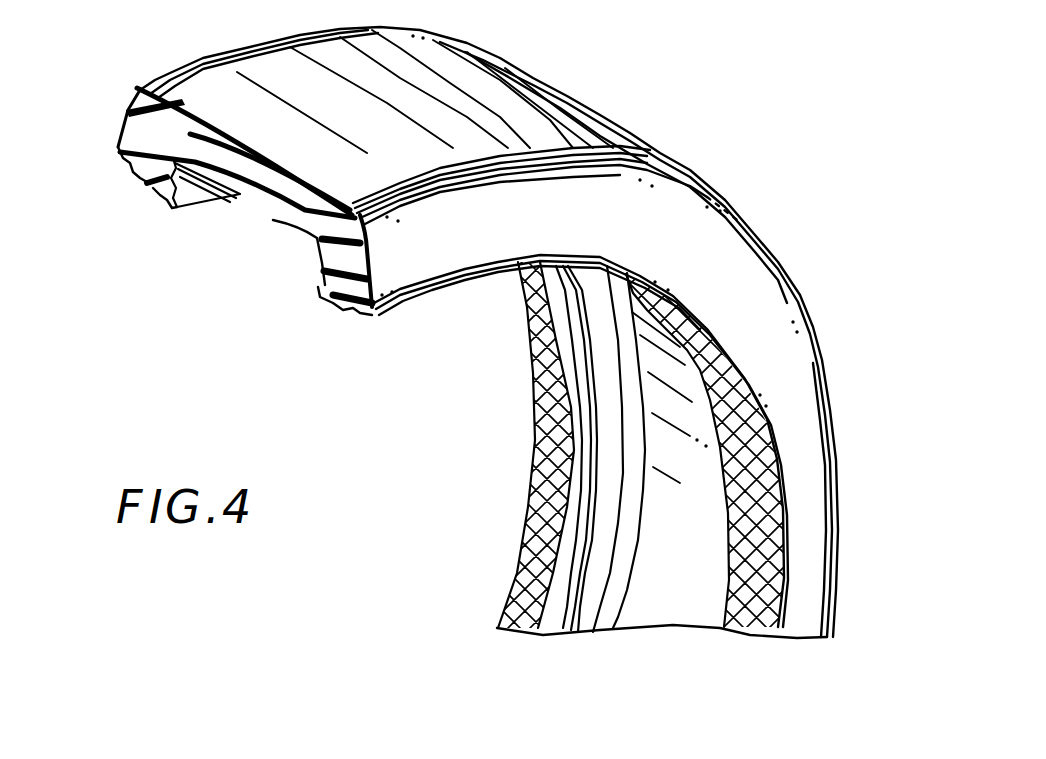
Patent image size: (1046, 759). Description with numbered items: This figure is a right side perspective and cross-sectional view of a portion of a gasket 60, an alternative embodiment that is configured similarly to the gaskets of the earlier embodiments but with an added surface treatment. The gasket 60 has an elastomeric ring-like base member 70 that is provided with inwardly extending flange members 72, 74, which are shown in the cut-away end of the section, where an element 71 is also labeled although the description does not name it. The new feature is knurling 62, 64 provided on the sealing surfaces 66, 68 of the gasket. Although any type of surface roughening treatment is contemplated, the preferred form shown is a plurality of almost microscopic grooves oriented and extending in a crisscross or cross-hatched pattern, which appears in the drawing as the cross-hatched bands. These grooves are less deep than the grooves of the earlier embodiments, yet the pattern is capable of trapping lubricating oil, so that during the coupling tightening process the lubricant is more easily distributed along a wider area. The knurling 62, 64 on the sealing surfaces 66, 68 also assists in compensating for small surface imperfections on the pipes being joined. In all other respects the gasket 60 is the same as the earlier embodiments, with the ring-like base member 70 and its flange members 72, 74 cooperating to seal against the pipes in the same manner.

The gasket 60 is at (562, 96).
The knurling 62 is at (140, 178).
The knurling 64 is at (348, 307).
The sealing surface 66 is at (530, 483).
The sealing surface 68 is at (786, 545).
The elastomeric ring-like base member 70 is at (310, 143).
The rib 71 is at (257, 200).
The inwardly extending flange member 72 is at (133, 131).
The inwardly extending flange member 74 is at (333, 259).